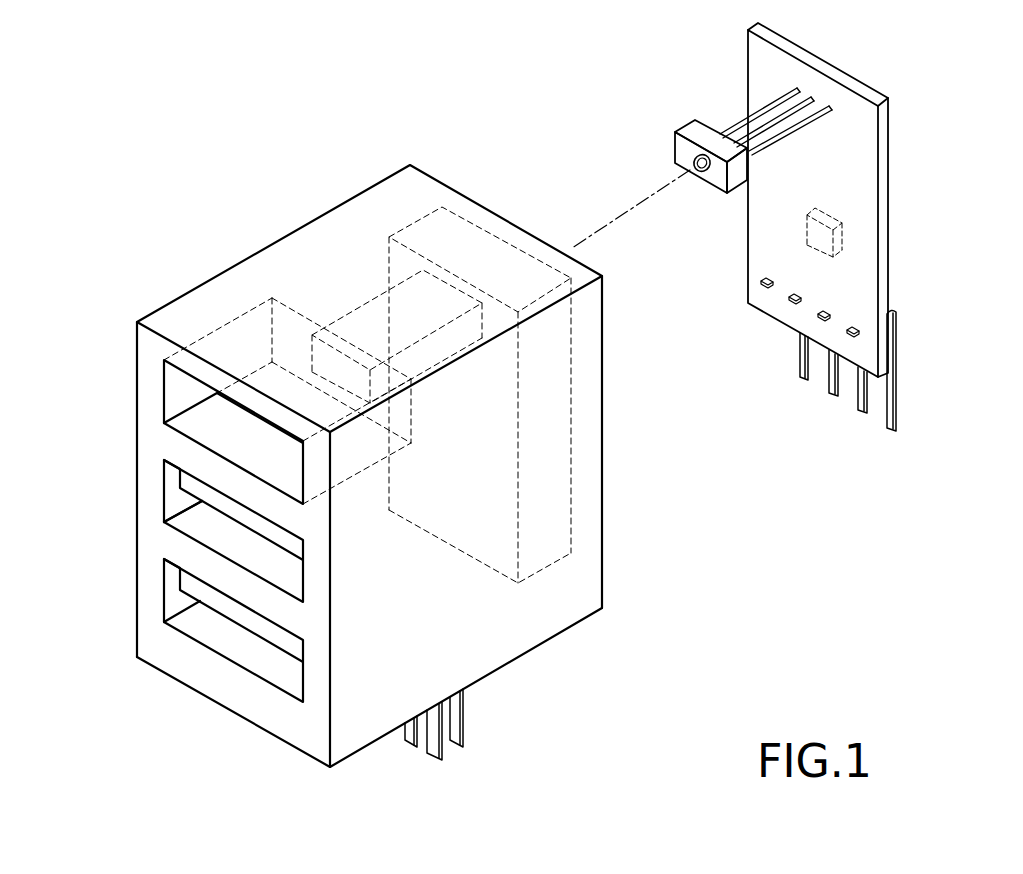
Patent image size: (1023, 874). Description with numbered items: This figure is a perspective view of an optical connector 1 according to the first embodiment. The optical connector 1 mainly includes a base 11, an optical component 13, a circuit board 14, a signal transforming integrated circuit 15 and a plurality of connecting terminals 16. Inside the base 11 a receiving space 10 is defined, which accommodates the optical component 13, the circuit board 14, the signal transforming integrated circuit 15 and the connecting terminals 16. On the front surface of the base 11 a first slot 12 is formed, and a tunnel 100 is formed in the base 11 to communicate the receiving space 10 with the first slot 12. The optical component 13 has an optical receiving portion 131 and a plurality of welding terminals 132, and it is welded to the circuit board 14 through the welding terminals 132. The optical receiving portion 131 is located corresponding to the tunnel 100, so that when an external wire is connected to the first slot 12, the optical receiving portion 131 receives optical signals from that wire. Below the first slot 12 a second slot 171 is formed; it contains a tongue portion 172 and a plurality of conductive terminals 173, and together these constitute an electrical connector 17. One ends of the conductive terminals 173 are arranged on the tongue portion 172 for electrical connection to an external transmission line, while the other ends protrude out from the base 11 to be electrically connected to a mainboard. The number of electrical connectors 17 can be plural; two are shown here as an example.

The optical connector 1 is at (421, 73).
The receiving space 10 is at (548, 455).
The base 11 is at (278, 270).
The tunnel 100 is at (367, 318).
The first slot 12 is at (175, 388).
The optical component 13 is at (707, 119).
The optical receiving portion 131 is at (692, 162).
The welding terminals 132 is at (737, 120).
The circuit board 14 is at (874, 227).
The signal transforming integrated circuit 15 is at (827, 240).
The connecting terminals 16 is at (890, 407).
The electrical connector 17 is at (167, 571).
The second slot 171 is at (173, 505).
The tongue portion 172 is at (190, 485).
The conductive terminals 173 is at (455, 718).